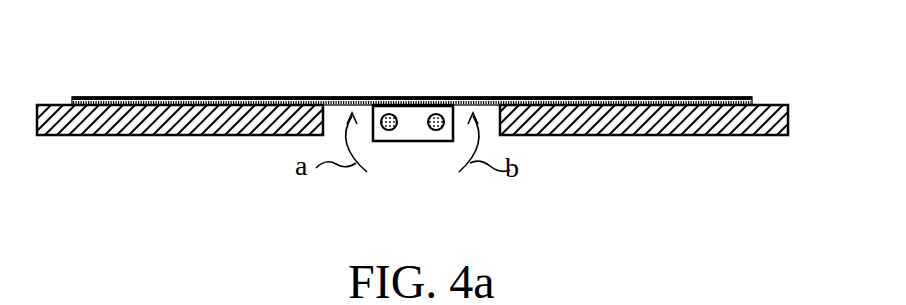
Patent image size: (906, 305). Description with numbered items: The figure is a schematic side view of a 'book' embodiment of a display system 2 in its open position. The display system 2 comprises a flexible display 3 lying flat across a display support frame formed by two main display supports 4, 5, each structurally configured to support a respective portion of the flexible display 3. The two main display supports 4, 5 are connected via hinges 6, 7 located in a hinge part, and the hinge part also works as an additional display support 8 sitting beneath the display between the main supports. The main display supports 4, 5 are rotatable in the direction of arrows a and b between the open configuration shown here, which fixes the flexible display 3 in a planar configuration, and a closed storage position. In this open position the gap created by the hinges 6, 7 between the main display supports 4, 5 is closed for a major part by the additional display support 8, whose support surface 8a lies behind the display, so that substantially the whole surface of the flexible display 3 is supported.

The display system 2 is at (347, 92).
The flexible display 3 is at (193, 97).
The main display support 4 is at (229, 117).
The main display support 5 is at (643, 117).
The hinge 6 is at (389, 131).
The hinge 7 is at (436, 131).
The additional display support 8 is at (410, 141).
The support surface 8a is at (412, 110).